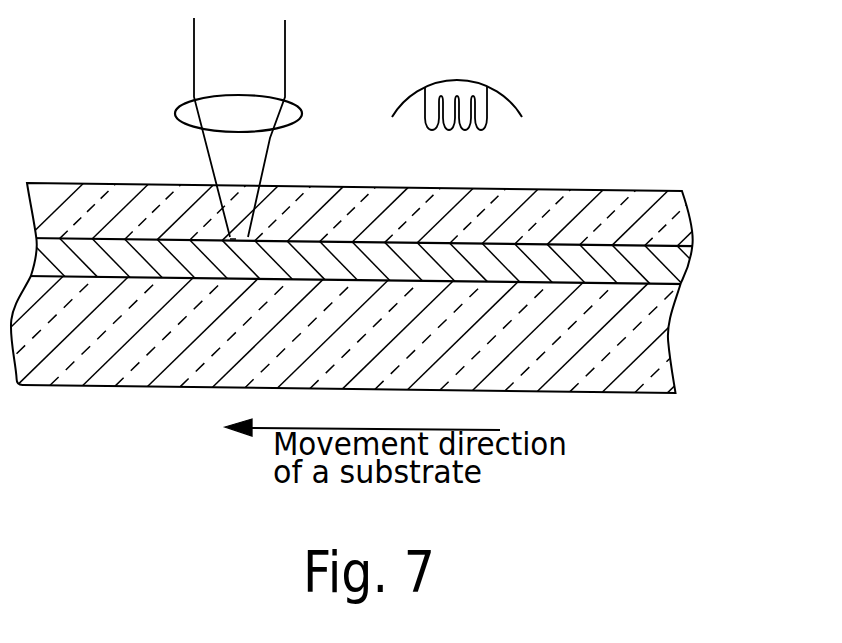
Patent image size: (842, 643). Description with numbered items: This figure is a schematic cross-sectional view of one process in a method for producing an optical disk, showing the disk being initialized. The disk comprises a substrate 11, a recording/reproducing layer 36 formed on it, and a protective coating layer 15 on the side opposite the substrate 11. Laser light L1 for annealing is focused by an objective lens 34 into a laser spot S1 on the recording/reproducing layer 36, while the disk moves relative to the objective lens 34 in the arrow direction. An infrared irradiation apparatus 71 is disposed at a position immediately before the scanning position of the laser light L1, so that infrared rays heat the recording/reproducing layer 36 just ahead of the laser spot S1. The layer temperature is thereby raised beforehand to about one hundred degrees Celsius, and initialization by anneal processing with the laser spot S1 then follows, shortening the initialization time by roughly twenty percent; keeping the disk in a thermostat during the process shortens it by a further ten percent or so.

The substrate 11 is at (672, 337).
The protective coating layer 15 is at (696, 221).
The recording/reproducing layer 36 is at (692, 267).
The objective lens 34 is at (178, 107).
The laser light L1 is at (285, 50).
The laser spot S1 is at (232, 240).
The infrared irradiation apparatus 71 is at (512, 101).